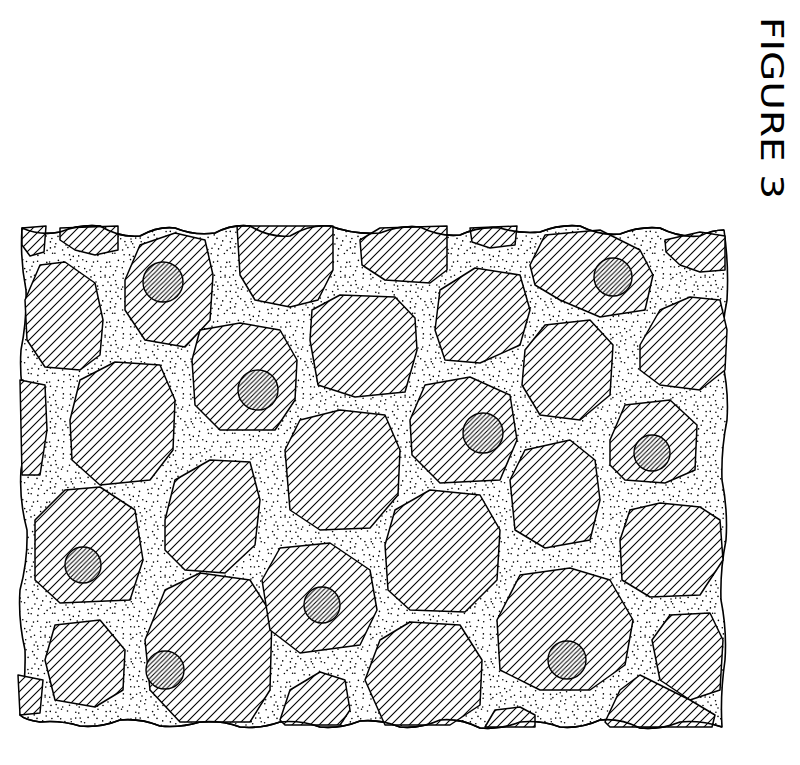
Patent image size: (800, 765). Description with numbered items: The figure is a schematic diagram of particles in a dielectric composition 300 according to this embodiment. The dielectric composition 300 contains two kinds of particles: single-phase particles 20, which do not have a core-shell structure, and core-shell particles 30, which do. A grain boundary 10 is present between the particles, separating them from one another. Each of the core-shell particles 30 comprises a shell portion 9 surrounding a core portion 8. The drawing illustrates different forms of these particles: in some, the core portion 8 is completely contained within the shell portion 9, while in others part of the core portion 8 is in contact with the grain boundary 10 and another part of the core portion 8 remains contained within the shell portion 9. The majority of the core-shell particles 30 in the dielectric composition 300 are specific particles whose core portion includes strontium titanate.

The dielectric composition 300 is at (537, 224).
The grain boundary 10 is at (340, 232).
The single-phase particles 20 is at (417, 298).
The core-shell particles 30 is at (288, 308).
The shell portion 9 is at (203, 337).
The core portion 8 is at (243, 378).